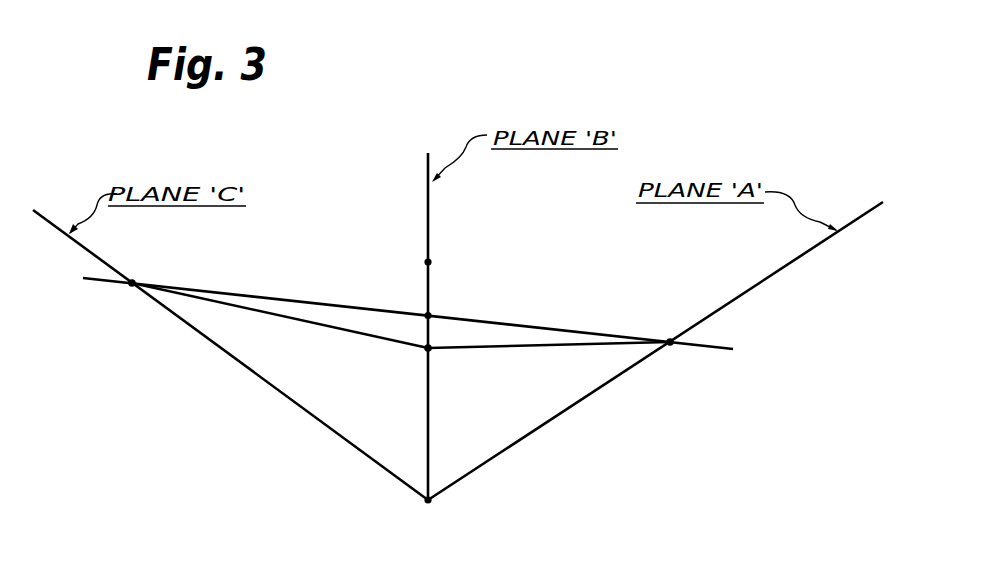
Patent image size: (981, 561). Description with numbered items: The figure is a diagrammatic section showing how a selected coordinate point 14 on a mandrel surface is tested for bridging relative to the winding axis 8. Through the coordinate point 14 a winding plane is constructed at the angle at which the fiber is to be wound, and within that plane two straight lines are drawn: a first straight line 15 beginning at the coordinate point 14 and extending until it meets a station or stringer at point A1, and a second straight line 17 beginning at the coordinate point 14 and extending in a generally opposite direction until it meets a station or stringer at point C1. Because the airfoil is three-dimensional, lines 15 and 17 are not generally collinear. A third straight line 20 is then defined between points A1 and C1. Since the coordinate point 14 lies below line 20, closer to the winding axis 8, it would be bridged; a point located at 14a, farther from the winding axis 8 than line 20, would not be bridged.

The winding axis 8 is at (420, 504).
The coordinate point 14 is at (432, 350).
The coordinate point 14a is at (432, 262).
The first straight line 15 is at (555, 348).
The second straight line 17 is at (365, 338).
The third straight line 20 is at (313, 300).
The intersection point A1 is at (672, 346).
The intersection point C1 is at (128, 288).